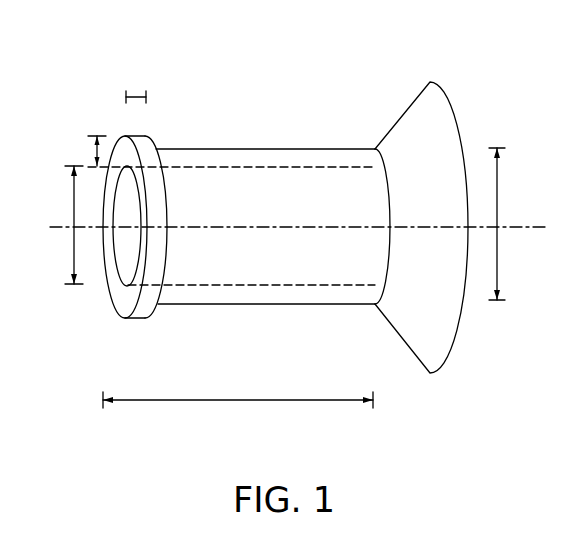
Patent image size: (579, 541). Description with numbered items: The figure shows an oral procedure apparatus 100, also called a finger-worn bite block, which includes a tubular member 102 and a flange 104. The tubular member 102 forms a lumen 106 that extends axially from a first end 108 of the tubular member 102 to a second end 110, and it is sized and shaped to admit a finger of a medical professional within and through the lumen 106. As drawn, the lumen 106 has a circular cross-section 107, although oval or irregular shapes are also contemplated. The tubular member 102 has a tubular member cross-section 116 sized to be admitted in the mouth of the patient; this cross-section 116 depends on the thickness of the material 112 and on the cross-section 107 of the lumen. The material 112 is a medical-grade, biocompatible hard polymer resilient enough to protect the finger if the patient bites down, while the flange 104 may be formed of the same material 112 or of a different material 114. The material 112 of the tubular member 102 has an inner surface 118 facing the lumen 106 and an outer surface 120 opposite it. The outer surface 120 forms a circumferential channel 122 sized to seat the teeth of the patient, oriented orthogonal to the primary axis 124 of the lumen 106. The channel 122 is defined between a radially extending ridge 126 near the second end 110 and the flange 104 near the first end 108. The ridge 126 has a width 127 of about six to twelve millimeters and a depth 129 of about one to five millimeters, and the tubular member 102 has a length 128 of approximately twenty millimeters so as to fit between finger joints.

The oral procedure apparatus 100 is at (278, 217).
The tubular member 102 is at (231, 167).
The flange 104 is at (402, 349).
The lumen 106 is at (277, 229).
The cross-section of the lumen 107 is at (73, 200).
The first end 108 is at (127, 223).
The second end 110 is at (375, 306).
The material 112 is at (205, 167).
The different material 114 is at (443, 143).
The tubular member cross-section 116 is at (498, 265).
The inner surface 118 is at (340, 176).
The outer surface 120 is at (289, 148).
The channel 122 is at (245, 140).
The primary axis 124 is at (350, 229).
The ridge 126 is at (137, 136).
The width 127 is at (135, 94).
The length 128 is at (247, 402).
The depth 129 is at (95, 147).